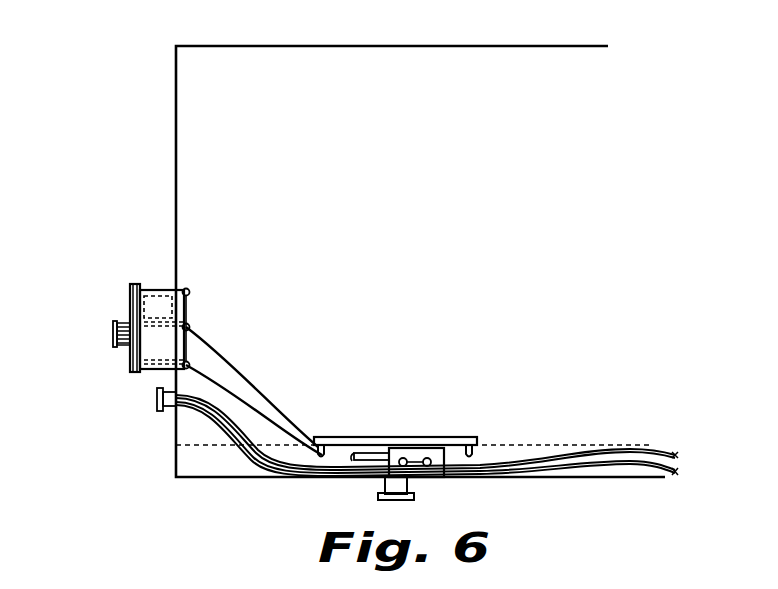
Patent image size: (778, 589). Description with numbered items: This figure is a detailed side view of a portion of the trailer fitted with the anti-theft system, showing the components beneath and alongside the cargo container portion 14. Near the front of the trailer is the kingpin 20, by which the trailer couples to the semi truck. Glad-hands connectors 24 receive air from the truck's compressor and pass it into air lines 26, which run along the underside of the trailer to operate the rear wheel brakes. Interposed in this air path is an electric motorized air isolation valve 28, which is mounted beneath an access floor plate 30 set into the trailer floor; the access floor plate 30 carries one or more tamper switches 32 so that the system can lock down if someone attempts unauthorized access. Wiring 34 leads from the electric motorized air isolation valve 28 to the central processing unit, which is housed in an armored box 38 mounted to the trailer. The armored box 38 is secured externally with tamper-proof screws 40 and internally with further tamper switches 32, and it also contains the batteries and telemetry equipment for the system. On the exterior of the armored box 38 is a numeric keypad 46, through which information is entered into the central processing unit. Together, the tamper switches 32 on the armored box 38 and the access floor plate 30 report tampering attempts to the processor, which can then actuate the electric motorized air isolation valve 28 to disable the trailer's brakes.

The cargo container portion 14 is at (262, 63).
The kingpin 20 is at (410, 485).
The glad-hands connectors 24 is at (157, 401).
The air lines 26 is at (228, 453).
The electric motorized air isolation valve 28 is at (440, 475).
The access floor plate 30 is at (395, 437).
The tamper switches 32 is at (190, 364).
The wiring 34 is at (258, 400).
The armored box 38 is at (130, 283).
The tamper-proof screws 40 is at (130, 368).
The numeric keypad 46 is at (114, 337).